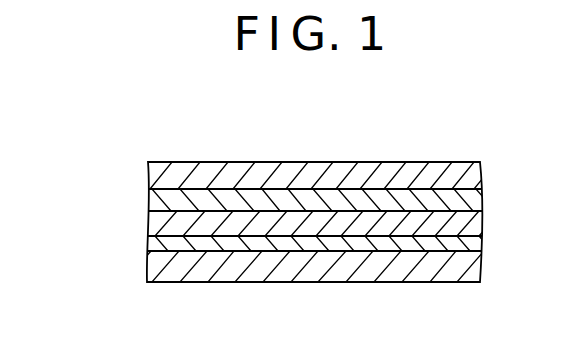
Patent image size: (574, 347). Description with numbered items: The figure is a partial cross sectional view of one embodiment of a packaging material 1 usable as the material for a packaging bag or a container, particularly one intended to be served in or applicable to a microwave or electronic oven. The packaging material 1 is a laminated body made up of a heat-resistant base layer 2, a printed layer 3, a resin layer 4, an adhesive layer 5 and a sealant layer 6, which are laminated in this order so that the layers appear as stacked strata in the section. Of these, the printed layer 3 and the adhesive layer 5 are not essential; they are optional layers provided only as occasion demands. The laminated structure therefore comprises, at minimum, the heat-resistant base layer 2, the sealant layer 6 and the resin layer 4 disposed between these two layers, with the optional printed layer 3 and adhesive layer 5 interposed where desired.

The packaging material 1 is at (120, 228).
The heat-resistant base layer 2 is at (474, 273).
The printed layer 3 is at (472, 245).
The resin layer 4 is at (468, 225).
The adhesive layer 5 is at (475, 199).
The sealant layer 6 is at (477, 169).